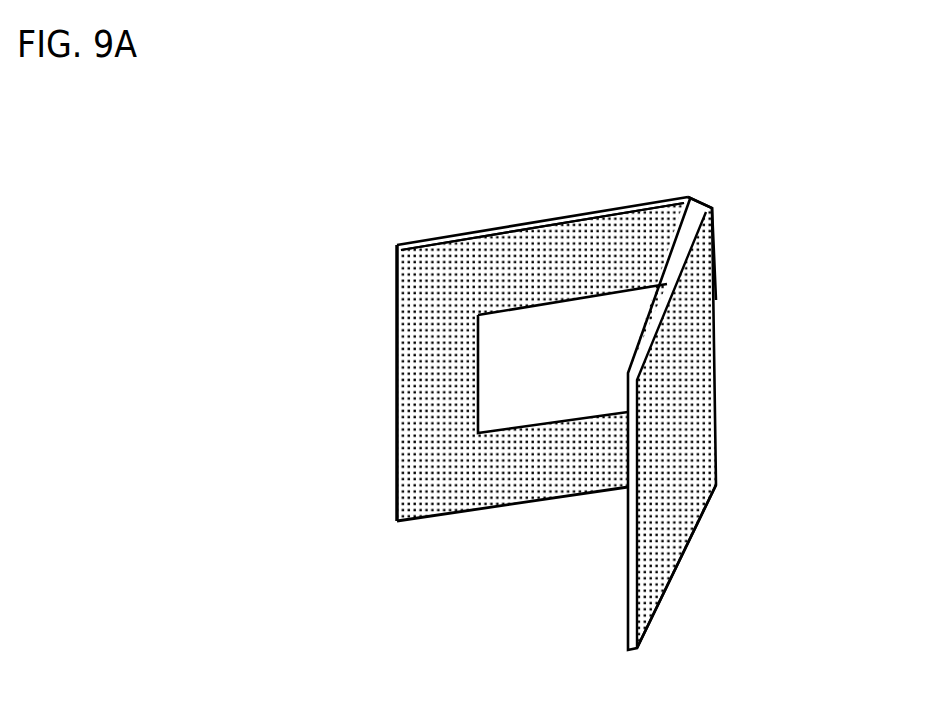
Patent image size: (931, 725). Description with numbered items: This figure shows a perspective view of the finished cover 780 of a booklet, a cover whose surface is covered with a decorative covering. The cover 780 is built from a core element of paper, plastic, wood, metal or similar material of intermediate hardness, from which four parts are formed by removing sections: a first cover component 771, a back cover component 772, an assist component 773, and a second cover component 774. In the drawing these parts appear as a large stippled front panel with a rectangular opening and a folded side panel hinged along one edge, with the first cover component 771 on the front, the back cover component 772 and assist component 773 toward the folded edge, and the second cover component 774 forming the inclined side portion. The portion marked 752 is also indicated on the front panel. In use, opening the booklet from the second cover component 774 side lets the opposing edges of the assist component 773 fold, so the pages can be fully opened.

The cover 780 is at (561, 387).
The front plate portion 752 is at (398, 462).
The first cover component 771 is at (440, 260).
The back cover component 772 is at (702, 207).
The assist component 773 is at (707, 481).
The second cover component 774 is at (682, 560).